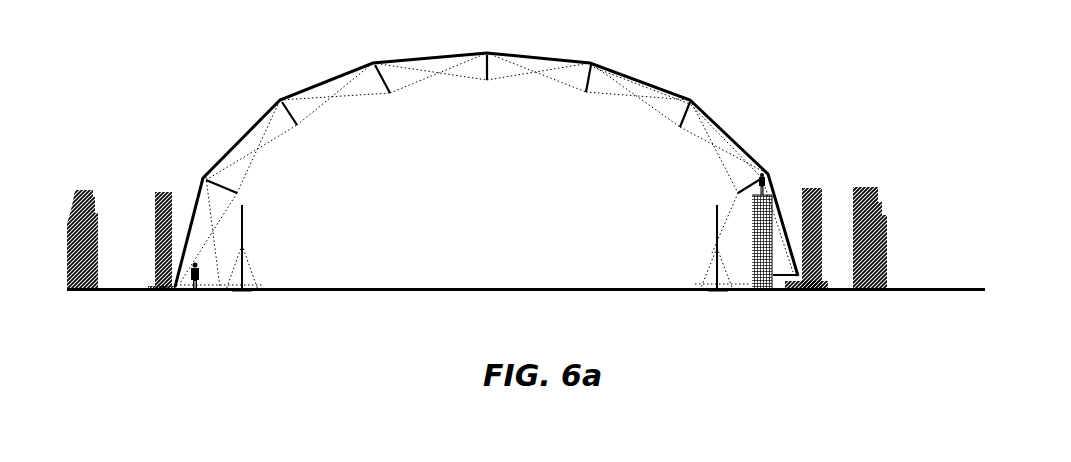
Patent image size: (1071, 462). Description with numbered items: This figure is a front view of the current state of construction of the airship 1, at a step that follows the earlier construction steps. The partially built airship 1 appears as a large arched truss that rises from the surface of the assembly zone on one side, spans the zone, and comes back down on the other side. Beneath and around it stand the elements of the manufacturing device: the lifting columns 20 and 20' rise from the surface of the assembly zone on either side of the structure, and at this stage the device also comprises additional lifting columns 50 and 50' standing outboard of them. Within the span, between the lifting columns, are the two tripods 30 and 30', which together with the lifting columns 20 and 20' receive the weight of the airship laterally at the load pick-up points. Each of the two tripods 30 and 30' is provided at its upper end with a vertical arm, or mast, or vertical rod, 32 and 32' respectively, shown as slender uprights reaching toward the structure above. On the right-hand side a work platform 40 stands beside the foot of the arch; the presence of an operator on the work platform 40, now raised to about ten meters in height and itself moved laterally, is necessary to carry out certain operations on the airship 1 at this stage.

The airship 1 is at (690, 83).
The lifting column 20 is at (179, 210).
The lifting column 20' is at (828, 209).
The tripod 30 is at (224, 317).
The tripod 30' is at (702, 317).
The vertical arm, or mast, or vertical rod 32 is at (265, 247).
The vertical arm, or mast, or vertical rod 32' is at (695, 247).
The work platform 40 is at (763, 292).
The additional lifting column 50 is at (96, 210).
The additional lifting column 50' is at (887, 209).